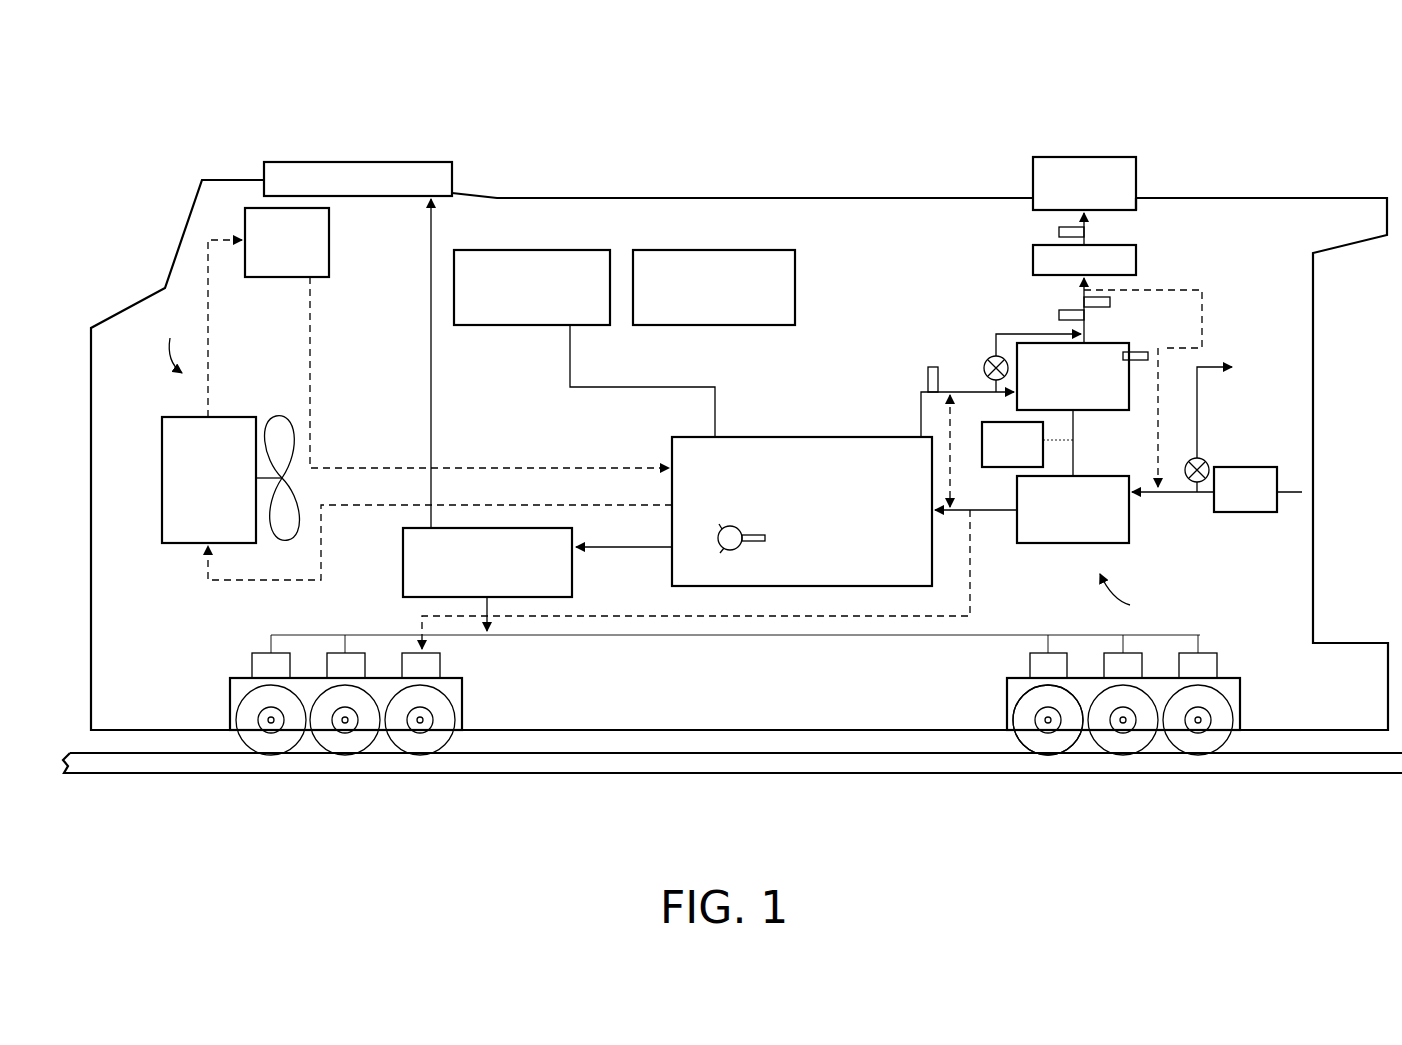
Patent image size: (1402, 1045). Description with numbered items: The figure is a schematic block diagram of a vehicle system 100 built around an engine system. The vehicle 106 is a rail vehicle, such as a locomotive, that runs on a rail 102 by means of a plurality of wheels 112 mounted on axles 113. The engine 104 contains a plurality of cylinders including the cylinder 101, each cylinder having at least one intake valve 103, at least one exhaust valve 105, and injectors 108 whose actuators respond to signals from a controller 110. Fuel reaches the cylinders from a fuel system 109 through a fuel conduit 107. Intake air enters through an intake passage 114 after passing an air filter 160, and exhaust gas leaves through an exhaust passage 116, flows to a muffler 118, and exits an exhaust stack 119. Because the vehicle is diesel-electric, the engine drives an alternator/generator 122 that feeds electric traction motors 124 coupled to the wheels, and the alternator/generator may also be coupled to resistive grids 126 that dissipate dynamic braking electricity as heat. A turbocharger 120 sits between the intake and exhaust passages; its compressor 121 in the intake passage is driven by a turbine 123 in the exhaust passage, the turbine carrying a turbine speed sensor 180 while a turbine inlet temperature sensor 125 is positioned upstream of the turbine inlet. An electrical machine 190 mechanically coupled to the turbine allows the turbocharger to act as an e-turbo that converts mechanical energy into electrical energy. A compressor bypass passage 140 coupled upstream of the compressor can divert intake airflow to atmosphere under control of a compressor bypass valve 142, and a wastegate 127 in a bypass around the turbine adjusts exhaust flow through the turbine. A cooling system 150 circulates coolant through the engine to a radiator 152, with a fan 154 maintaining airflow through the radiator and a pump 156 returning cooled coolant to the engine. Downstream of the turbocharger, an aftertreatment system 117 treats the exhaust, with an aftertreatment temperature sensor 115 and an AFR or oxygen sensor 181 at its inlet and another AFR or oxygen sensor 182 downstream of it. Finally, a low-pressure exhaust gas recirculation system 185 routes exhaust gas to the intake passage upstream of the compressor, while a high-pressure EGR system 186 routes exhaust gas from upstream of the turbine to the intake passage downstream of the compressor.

The vehicle system 100 is at (1338, 84).
The cylinder 101 is at (741, 530).
The rail 102 is at (1310, 773).
The intake valve 103 is at (723, 529).
The engine 104 is at (802, 511).
The exhaust valve 105 is at (729, 550).
The vehicle 106 is at (898, 198).
The fuel conduit 107 is at (566, 350).
The injectors 108 is at (759, 541).
The fuel system 109 is at (530, 250).
The controller 110 is at (688, 250).
The wheels 112 is at (446, 703).
The axles 113 is at (1046, 720).
The intake passage 114 is at (1014, 512).
The aftertreatment temperature sensor 115 is at (1058, 316).
The exhaust passage 116 is at (921, 436).
The aftertreatment system 117 is at (1084, 260).
The muffler 118 is at (1136, 210).
The exhaust stack 119 is at (1084, 183).
The turbocharger 120 is at (1142, 596).
The compressor 121 is at (1073, 509).
The alternator/generator 122 is at (402, 570).
The turbine 123 is at (1073, 409).
The electric traction motors 124 is at (441, 662).
The turbine inlet temperature sensor 125 is at (928, 376).
The resistive grids 126 is at (446, 162).
The wastegate 127 is at (989, 359).
The compressor bypass passage 140 is at (1206, 364).
The compressor bypass valve 142 is at (1187, 464).
The cooling system 150 is at (166, 341).
The radiator 152 is at (222, 480).
The fan 154 is at (290, 416).
The pump 156 is at (440, 394).
The air filter 160 is at (1245, 489).
The turbine speed sensor 180 is at (1148, 352).
The AFR sensor or O2 sensor 181 is at (1110, 302).
The AFR sensor or O2 sensor 182 is at (1058, 232).
The low-pressure exhaust gas recirculation system 185 is at (1202, 290).
The high-pressure EGR system 186 is at (958, 418).
The electrical machine 190 is at (1027, 444).